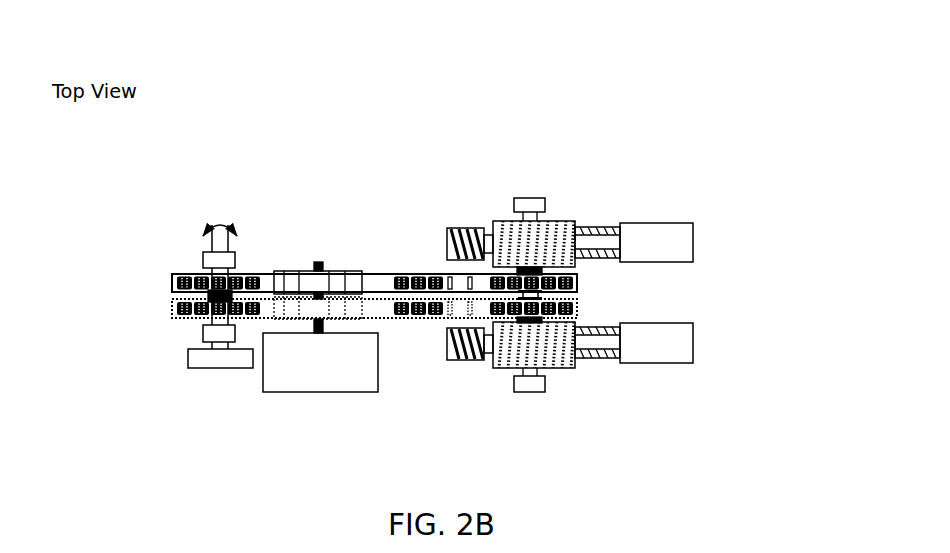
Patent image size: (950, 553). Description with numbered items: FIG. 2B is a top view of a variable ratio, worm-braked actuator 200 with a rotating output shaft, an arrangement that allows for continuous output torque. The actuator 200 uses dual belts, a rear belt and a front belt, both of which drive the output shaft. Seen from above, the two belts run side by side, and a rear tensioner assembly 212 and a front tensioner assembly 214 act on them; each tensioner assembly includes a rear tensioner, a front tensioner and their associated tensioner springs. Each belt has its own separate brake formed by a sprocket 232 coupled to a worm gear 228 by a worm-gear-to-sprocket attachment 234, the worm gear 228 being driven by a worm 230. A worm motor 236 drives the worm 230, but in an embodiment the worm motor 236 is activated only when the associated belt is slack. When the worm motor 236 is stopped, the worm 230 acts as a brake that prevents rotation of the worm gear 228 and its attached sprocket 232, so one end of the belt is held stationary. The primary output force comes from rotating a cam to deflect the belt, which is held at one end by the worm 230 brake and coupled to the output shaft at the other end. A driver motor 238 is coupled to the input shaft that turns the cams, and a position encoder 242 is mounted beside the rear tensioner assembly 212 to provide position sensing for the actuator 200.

The actuator 200 is at (155, 62).
The rear tensioner assembly 212 is at (388, 270).
The front tensioner assembly 214 is at (423, 328).
The worm gear 228 is at (445, 228).
The worm 230 is at (500, 218).
The sprocket 232 is at (577, 283).
The worm-gear-to-sprocket attachment 234 is at (543, 268).
The worm motor 236 is at (693, 242).
The driver motor 238 is at (297, 403).
The position encoder 242 is at (182, 377).